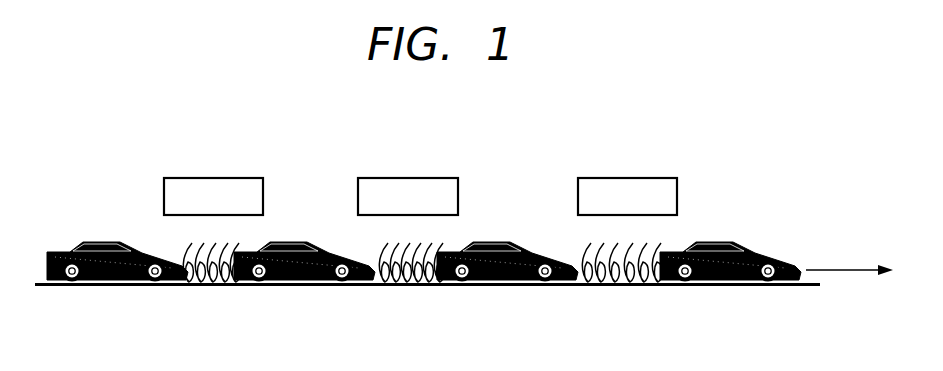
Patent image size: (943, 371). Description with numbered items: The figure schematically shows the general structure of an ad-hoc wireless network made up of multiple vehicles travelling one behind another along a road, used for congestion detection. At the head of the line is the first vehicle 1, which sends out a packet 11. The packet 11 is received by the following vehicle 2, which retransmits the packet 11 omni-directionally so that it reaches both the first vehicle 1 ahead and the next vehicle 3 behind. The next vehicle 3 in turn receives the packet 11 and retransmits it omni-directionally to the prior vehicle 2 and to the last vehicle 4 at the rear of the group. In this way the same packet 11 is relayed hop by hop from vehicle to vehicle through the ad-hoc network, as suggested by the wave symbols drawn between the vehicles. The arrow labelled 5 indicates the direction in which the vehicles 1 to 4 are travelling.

The first vehicle 1 is at (717, 280).
The following vehicle 2 is at (508, 279).
The next vehicle 3 is at (305, 279).
The last vehicle 4 is at (115, 279).
The direction of vehicles 5 is at (837, 271).
The packet 11 is at (212, 177).